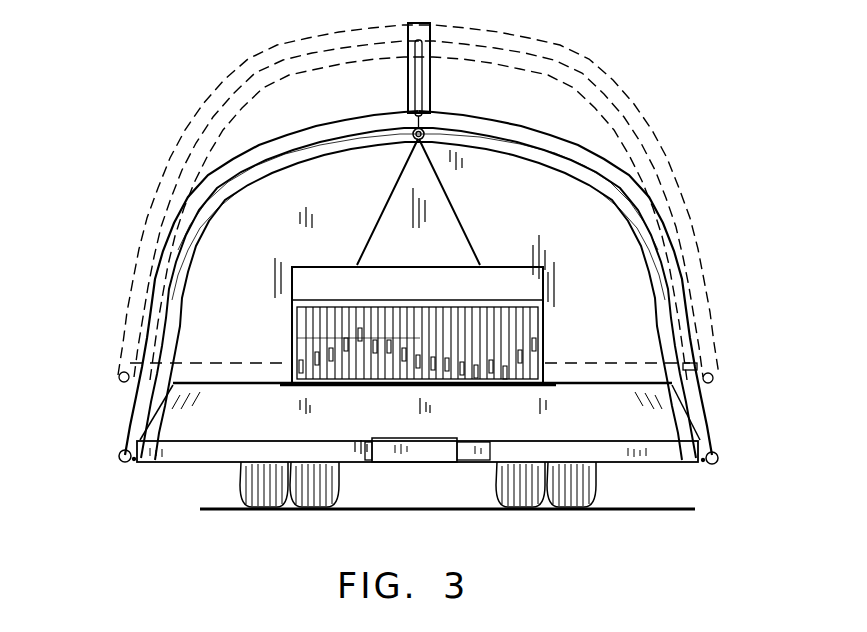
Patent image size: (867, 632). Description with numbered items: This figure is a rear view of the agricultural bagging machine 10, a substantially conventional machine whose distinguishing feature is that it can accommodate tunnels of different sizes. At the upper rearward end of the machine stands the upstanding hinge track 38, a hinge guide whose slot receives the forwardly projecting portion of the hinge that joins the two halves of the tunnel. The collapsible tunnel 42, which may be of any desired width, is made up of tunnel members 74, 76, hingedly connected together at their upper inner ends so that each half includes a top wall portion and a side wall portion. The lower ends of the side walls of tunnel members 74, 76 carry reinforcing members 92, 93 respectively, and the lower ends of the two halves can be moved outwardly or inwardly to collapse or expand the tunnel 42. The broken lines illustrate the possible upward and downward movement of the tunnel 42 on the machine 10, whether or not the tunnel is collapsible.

The agricultural bagging machine 10 is at (606, 125).
The hinge track 38 is at (440, 46).
The collapsible tunnel 42 is at (672, 221).
The tunnel member 74 is at (132, 334).
The tunnel member 76 is at (700, 310).
The reinforcing member 92 is at (119, 458).
The reinforcing member 93 is at (718, 457).